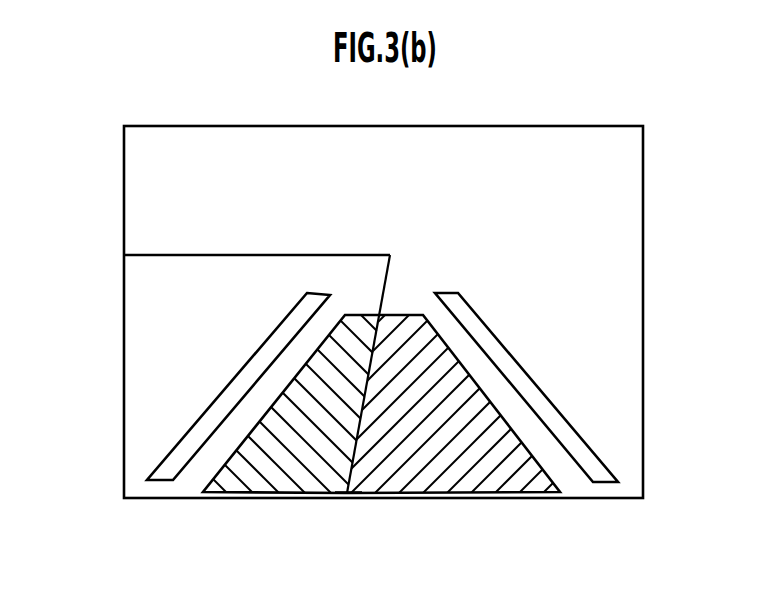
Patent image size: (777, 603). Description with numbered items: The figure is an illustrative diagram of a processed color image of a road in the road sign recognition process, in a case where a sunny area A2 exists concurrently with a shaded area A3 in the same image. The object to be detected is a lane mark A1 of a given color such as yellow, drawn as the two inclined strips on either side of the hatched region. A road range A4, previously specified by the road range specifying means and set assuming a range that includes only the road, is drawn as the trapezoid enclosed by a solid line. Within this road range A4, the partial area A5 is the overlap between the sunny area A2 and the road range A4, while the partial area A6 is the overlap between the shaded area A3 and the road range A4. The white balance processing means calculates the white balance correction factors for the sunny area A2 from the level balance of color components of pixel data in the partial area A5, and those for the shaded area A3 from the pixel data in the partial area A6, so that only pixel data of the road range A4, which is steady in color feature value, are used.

The lane mark A1 is at (183, 450).
The sunny area A2 is at (615, 332).
The shaded area A3 is at (148, 262).
The road range A4 is at (390, 316).
The partial area A5 is at (467, 480).
The partial area A6 is at (288, 478).